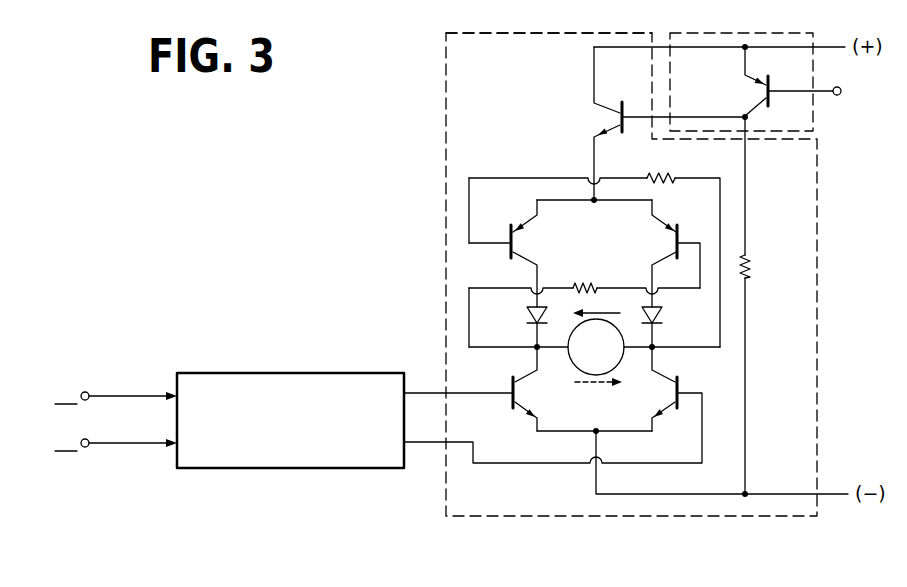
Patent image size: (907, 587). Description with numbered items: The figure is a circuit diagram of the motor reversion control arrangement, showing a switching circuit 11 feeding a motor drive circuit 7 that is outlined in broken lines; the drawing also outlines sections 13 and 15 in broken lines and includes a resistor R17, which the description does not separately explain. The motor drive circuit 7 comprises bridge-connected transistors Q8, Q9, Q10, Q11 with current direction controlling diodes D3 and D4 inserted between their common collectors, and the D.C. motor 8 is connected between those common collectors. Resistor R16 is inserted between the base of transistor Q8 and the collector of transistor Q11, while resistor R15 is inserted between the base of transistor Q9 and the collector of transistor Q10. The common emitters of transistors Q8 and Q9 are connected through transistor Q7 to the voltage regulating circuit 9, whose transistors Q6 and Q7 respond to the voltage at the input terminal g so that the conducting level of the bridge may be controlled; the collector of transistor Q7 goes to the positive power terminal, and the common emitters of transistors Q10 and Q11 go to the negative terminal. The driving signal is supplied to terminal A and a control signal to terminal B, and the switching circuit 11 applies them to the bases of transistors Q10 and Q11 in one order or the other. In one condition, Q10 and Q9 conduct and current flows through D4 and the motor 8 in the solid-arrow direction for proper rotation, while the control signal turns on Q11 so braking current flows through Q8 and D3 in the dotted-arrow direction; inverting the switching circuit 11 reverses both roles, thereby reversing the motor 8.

The motor drive circuit 7 is at (444, 78).
The D.C. motor 8 is at (615, 329).
The voltage regulating circuit 9 is at (814, 110).
The switching circuit 11 is at (286, 373).
The drive circuit section 13 is at (549, 16).
The transistor section 15 is at (741, 65).
The transistor Q6 is at (761, 92).
The transistor Q7 is at (613, 118).
The bridge connection transistor Q8 is at (522, 240).
The bridge connection transistor Q9 is at (668, 240).
The bridge connection transistor Q10 is at (523, 392).
The bridge connection transistor Q11 is at (672, 392).
The resistor R15 is at (585, 282).
The resistor R16 is at (667, 177).
The resistor R17 is at (752, 270).
The current direction controlling diode D3 is at (527, 316).
The current direction controlling diode D4 is at (665, 316).
The terminal A is at (116, 393).
The terminal B is at (116, 440).